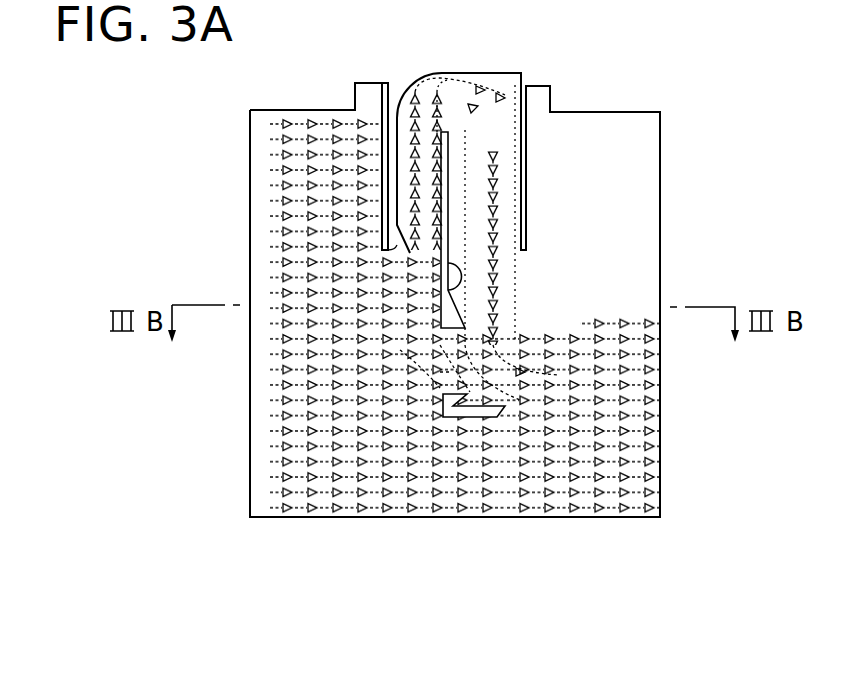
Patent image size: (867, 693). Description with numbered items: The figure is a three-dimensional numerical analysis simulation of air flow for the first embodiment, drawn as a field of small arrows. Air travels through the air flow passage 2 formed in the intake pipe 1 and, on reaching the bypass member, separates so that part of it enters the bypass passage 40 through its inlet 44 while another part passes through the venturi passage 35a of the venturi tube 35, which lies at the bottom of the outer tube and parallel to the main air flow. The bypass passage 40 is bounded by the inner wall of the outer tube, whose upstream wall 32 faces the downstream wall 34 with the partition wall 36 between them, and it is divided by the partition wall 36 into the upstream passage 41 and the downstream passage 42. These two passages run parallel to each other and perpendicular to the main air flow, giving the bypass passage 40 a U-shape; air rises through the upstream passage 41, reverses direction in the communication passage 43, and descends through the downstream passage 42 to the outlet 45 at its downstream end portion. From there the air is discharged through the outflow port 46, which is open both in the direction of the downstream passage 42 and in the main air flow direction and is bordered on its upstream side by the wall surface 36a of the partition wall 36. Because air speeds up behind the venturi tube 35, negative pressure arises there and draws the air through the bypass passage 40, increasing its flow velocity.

The intake pipe 1 is at (638, 110).
The air flow passage 2 is at (257, 147).
The upstream wall 32 is at (388, 177).
The downstream wall 34 is at (524, 153).
The venturi tube 35 is at (462, 418).
The venturi passage 35a is at (447, 371).
The partition wall 36 is at (447, 197).
The wall surface 36a is at (452, 295).
The bypass passage 40 is at (504, 110).
The upstream passage 41 is at (407, 122).
The downstream passage 42 is at (510, 203).
The communication passage 43 is at (458, 104).
The inlet 44 is at (395, 240).
The outlet 45 is at (503, 252).
The outflow port 46 is at (483, 295).